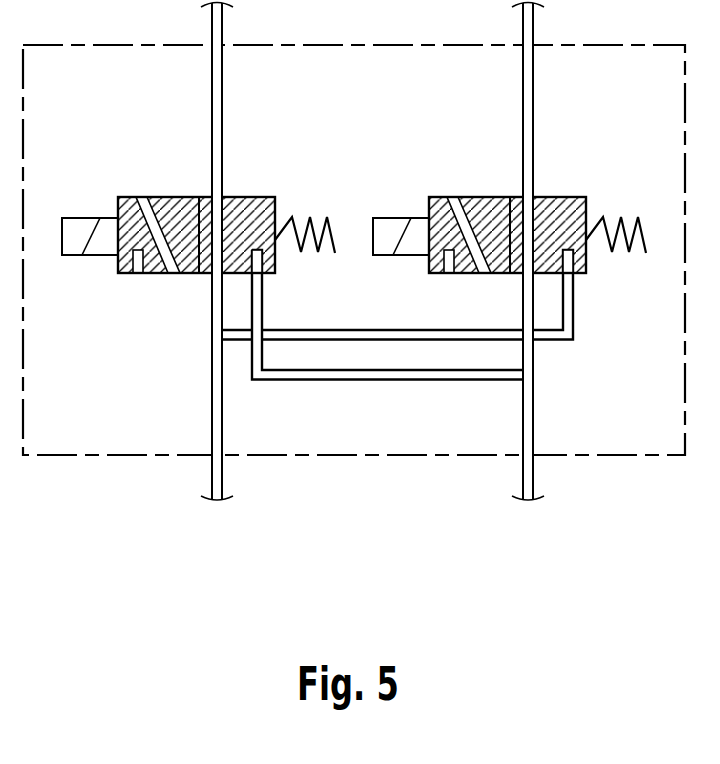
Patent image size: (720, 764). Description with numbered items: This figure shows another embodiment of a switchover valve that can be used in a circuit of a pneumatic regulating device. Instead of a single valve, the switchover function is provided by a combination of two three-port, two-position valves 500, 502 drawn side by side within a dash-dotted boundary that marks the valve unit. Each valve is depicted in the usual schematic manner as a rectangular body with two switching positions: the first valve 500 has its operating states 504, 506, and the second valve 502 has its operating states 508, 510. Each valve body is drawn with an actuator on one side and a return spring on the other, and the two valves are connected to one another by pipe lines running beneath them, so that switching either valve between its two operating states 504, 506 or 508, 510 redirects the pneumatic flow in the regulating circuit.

The 3/2-way valve 500 is at (197, 276).
The 3/2-way valve 502 is at (508, 273).
The operating state 504 is at (170, 213).
The operating state 506 is at (243, 213).
The operating state 508 is at (479, 213).
The operating state 510 is at (555, 213).